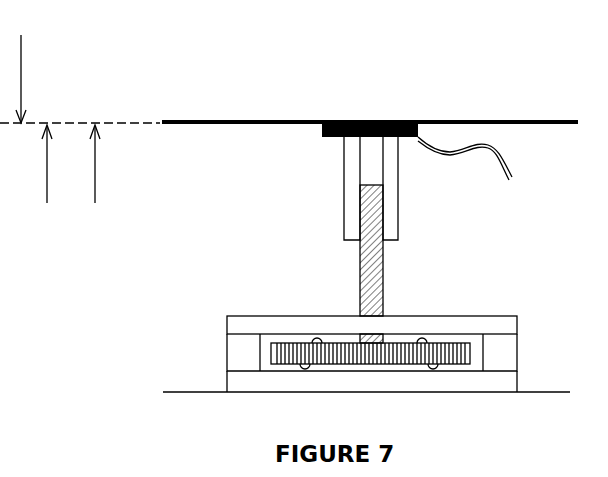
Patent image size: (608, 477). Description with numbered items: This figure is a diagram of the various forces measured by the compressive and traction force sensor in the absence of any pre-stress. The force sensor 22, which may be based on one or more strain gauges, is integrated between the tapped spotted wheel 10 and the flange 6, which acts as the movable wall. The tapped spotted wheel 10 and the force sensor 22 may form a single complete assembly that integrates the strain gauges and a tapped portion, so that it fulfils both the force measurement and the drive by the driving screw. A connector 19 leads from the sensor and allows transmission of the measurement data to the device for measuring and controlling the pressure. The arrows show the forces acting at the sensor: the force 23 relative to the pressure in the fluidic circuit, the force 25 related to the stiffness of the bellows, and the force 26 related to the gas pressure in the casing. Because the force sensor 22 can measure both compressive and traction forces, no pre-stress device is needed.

The flange 6 is at (556, 120).
The force sensor 22 is at (327, 138).
The tapped spotted wheel 10 is at (399, 218).
The connector 19 is at (498, 157).
The force relative to the pressure in the fluidic circuit 23 is at (21, 48).
The force related to the stiffness of the bellows 25 is at (47, 190).
The force related to the gas pressure in the casing 26 is at (95, 190).